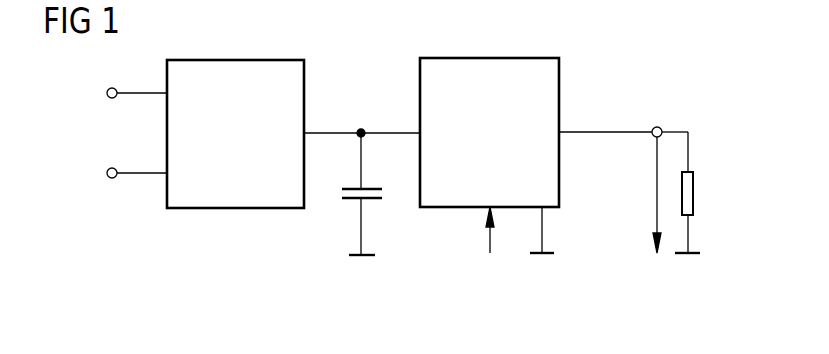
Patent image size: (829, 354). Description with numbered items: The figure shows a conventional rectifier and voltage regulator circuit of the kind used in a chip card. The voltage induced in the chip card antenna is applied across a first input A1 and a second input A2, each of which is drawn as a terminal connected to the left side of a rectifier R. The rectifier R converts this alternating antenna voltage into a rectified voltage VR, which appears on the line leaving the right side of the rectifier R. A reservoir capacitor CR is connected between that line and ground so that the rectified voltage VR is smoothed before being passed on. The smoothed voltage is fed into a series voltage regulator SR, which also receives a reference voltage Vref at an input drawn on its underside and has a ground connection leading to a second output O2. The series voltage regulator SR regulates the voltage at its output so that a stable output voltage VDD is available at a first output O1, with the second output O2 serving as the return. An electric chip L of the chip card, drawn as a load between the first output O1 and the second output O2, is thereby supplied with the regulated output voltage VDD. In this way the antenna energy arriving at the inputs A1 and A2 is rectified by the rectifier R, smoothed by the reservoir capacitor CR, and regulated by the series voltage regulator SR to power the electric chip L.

The rectifier R is at (235, 60).
The series voltage regulator SR is at (488, 58).
The rectified voltage VR is at (362, 118).
The reservoir capacitor CR is at (361, 200).
The first input A1 is at (107, 93).
The second input A2 is at (107, 173).
The first output O1 is at (623, 118).
The second output O2 is at (545, 255).
The output voltage VDD is at (634, 195).
The reference voltage Vref is at (491, 248).
The electric chip L is at (695, 195).